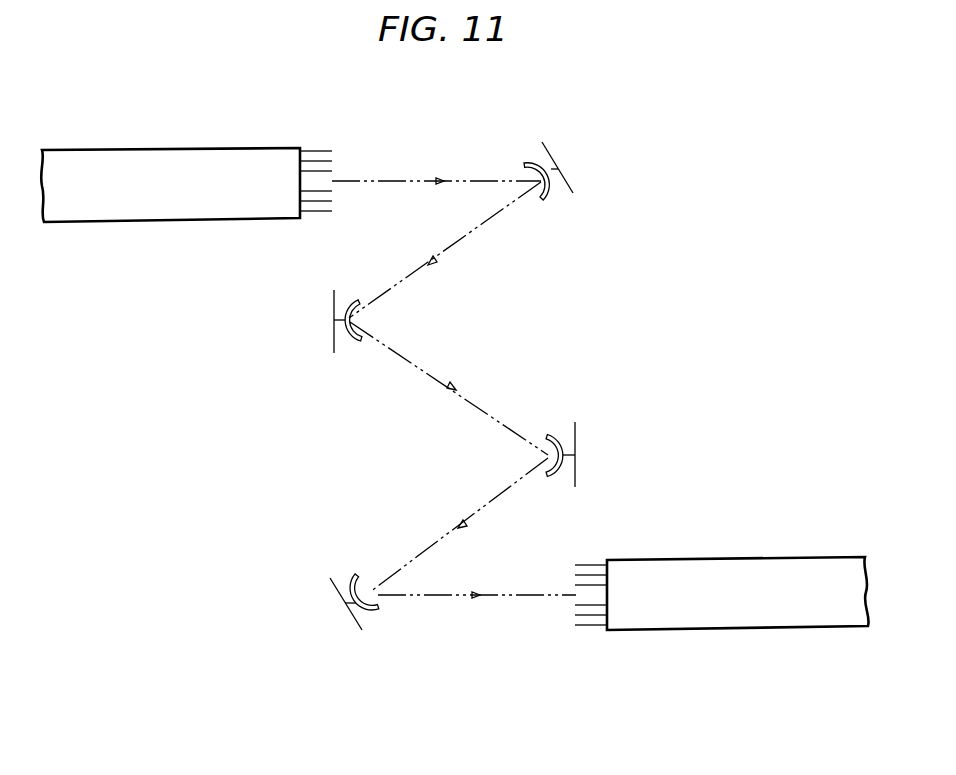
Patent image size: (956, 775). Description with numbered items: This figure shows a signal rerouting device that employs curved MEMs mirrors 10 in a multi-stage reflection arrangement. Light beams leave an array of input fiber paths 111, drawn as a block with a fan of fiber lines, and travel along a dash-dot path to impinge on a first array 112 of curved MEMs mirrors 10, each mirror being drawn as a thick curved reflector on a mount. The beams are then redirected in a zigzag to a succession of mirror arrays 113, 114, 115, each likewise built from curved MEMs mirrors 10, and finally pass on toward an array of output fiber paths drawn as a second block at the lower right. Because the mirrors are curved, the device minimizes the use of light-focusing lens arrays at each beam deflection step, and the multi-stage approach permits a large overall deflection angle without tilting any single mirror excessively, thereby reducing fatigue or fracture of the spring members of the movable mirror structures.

The curved MEMs mirror 10 is at (568, 181).
The array of input fiber paths 111 is at (314, 150).
The first array of curved MEMs mirrors 112 is at (577, 126).
The mirror array 113 is at (312, 294).
The mirror array 114 is at (621, 480).
The mirror array 115 is at (353, 668).